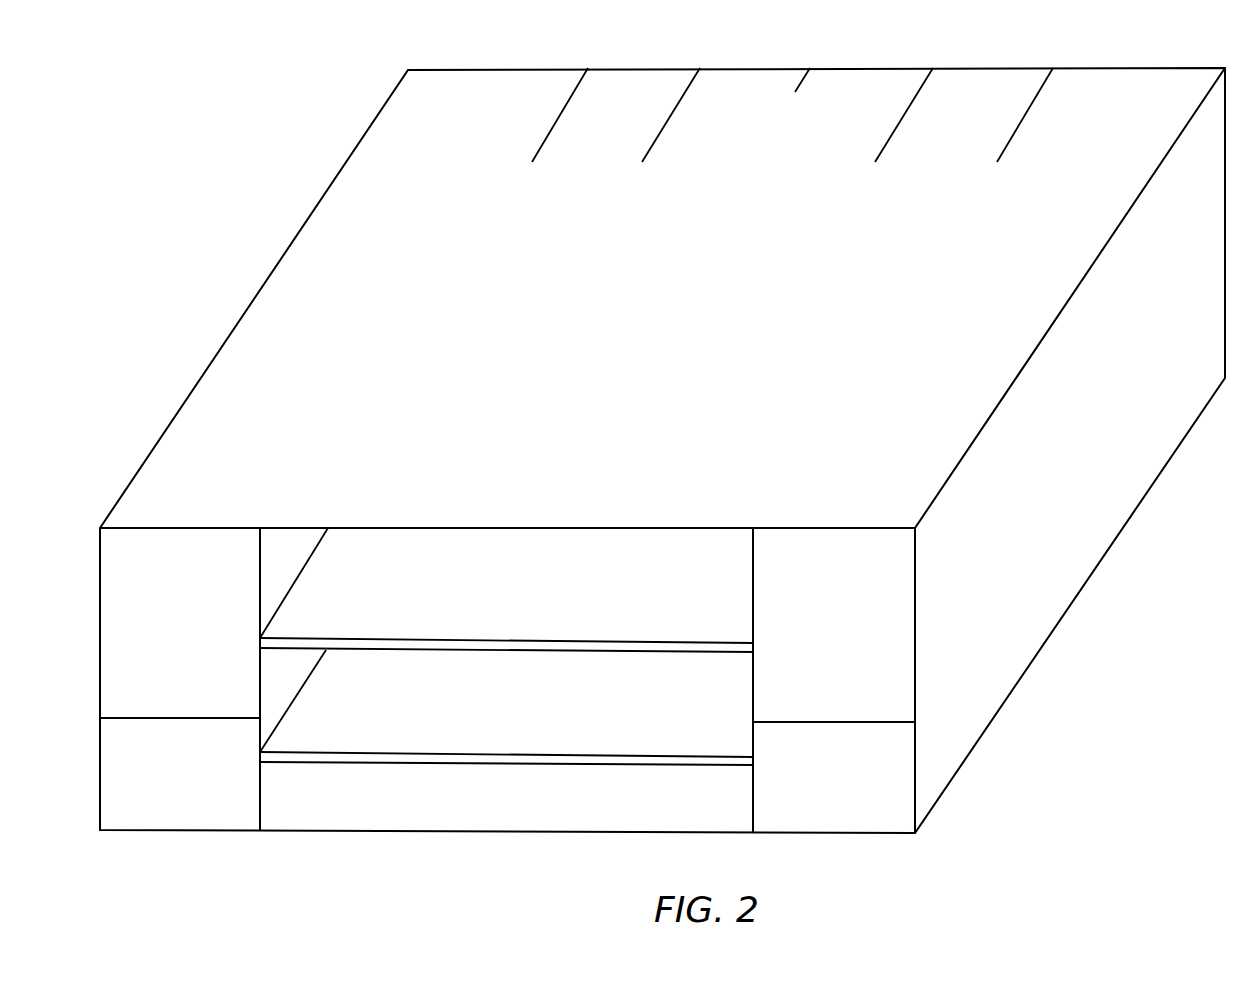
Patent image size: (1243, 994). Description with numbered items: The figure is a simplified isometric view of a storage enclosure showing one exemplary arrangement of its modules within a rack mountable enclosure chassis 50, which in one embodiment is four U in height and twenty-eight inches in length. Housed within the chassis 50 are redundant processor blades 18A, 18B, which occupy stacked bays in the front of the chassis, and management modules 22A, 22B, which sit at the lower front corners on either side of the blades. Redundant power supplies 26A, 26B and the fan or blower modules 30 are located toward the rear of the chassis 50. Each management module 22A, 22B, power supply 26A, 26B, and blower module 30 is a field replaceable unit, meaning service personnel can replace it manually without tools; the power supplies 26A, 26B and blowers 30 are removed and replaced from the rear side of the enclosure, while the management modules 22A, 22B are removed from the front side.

The enclosure chassis 50 is at (383, 92).
The power supply 26A is at (477, 130).
The power supply 26B is at (1114, 130).
The blower module 30 is at (753, 163).
The processor blade 18A is at (511, 608).
The processor blade 18B is at (511, 717).
The management module 22A is at (196, 793).
The management module 22B is at (855, 795).